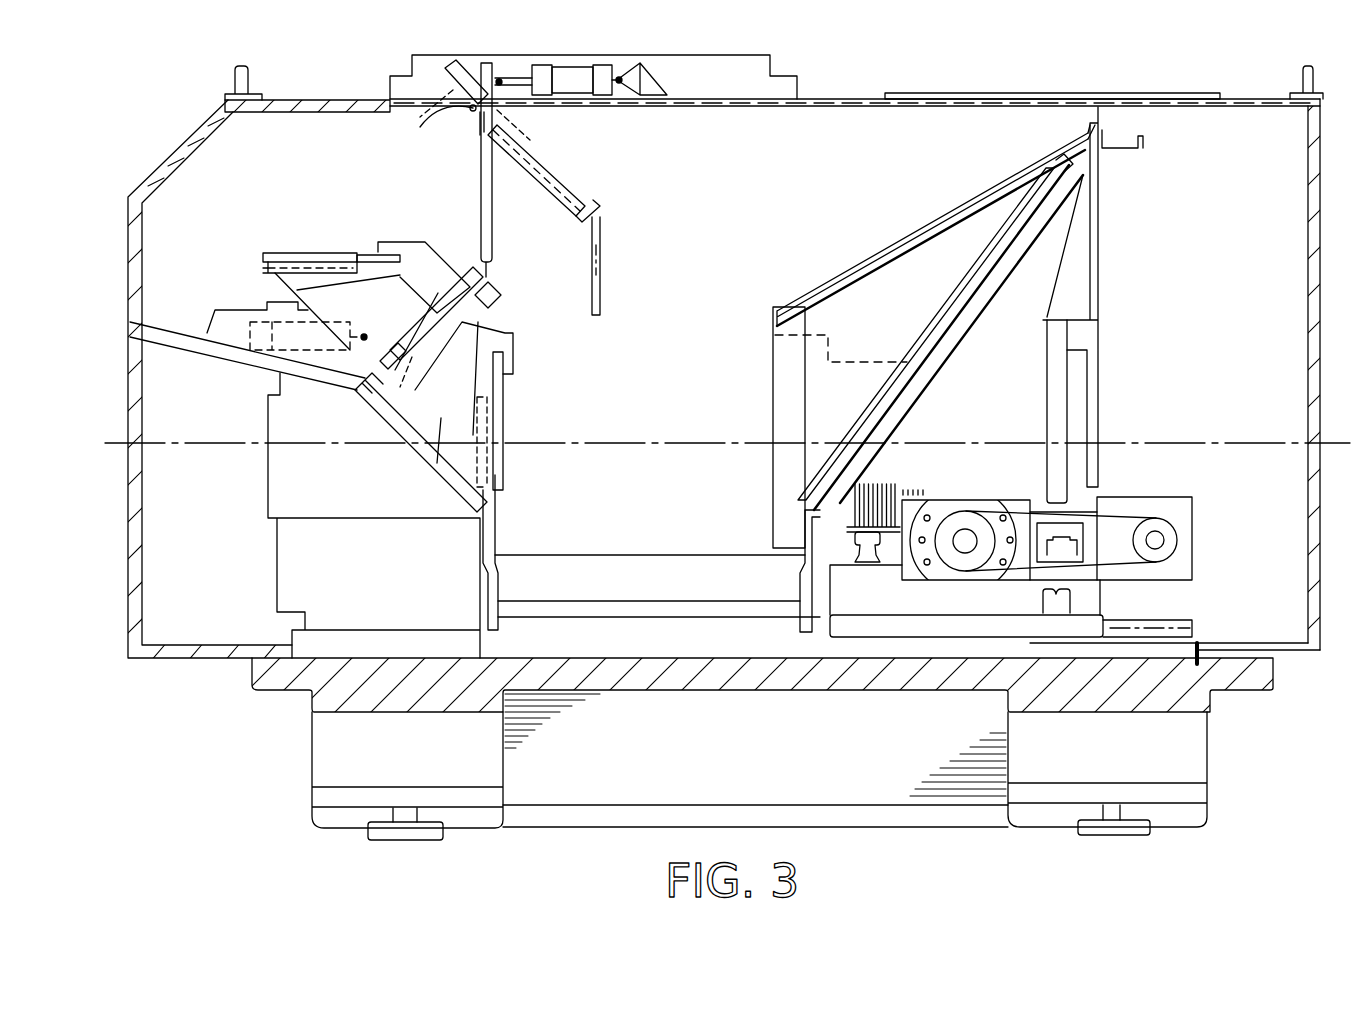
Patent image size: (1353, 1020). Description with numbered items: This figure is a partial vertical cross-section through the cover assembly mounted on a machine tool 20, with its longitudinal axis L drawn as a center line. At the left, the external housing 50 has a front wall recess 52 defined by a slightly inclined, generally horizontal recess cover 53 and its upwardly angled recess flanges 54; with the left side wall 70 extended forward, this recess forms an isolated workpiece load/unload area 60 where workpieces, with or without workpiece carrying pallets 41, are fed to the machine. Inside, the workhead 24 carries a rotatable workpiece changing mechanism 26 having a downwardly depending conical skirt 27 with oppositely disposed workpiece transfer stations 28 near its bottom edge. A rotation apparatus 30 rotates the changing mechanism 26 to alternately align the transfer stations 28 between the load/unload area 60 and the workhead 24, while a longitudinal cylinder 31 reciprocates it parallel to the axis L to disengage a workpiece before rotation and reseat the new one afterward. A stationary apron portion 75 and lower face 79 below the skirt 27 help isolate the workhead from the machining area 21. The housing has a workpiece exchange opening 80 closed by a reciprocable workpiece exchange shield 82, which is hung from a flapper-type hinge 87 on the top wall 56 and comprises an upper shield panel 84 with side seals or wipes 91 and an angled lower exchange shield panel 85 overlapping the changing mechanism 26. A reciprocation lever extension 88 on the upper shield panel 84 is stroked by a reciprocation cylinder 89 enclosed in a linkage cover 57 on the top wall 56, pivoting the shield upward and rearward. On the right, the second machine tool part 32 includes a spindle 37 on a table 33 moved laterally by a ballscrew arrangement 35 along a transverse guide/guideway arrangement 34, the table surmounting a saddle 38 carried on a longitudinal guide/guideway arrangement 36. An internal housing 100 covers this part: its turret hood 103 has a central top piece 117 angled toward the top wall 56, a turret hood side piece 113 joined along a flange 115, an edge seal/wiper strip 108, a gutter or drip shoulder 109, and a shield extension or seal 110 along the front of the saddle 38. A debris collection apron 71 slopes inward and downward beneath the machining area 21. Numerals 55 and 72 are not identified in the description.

The machine tool 20 is at (247, 556).
The machining area 21 is at (660, 483).
The workhead 24 is at (282, 503).
The workpiece changing mechanism 26 is at (530, 362).
The conical skirt 27 is at (442, 440).
The workpiece transfer stations 28 is at (384, 230).
The rotation apparatus 30 is at (382, 405).
The longitudinal cylinder 31 is at (258, 365).
The second machine tool part 32 is at (905, 352).
The table 33 is at (882, 492).
The transverse guide/guideway arrangement 34 is at (892, 545).
The ballscrew arrangement 35 is at (958, 584).
The longitudinal guide/guideway arrangement 36 is at (974, 620).
The spindle 37 is at (798, 383).
The saddle 38 is at (853, 607).
The workpiece carrying pallets 41 is at (318, 253).
The external housing 50 is at (162, 141).
The front wall recess 52 is at (170, 228).
The recess cover 53 is at (188, 330).
The recess flanges 54 is at (364, 334).
The lens holder 55 is at (225, 317).
The top wall 56 is at (300, 100).
The linkage cover 57 is at (790, 57).
The workpiece load/unload area 60 is at (293, 203).
The left side wall 70 is at (285, 186).
The debris collection apron 71 is at (623, 590).
The guide rail 72 is at (631, 648).
The stationary apron portion 75 is at (462, 480).
The lower face 79 is at (488, 535).
The workpiece exchange opening 80 is at (556, 311).
The workpiece exchange shield 82 is at (600, 178).
The upper shield panel 84 is at (492, 224).
The lower exchange shield panel 85 is at (602, 268).
The flapper-type hinge 87 is at (478, 113).
The reciprocation lever extension 88 is at (468, 111).
The reciprocation cylinder 89 is at (585, 80).
The side seals or wipes 91 is at (602, 214).
The internal housing 100 is at (770, 274).
The turret hood 103 is at (772, 307).
The edge seal/wiper strip 108 is at (976, 278).
The gutter or drip shoulder 109 is at (1145, 142).
The shield extension or seal 110 is at (803, 588).
The turret hood side piece 113 is at (890, 270).
The flange 115 is at (1000, 187).
The central top piece 117 is at (947, 210).
The longitudinal axis L is at (640, 443).